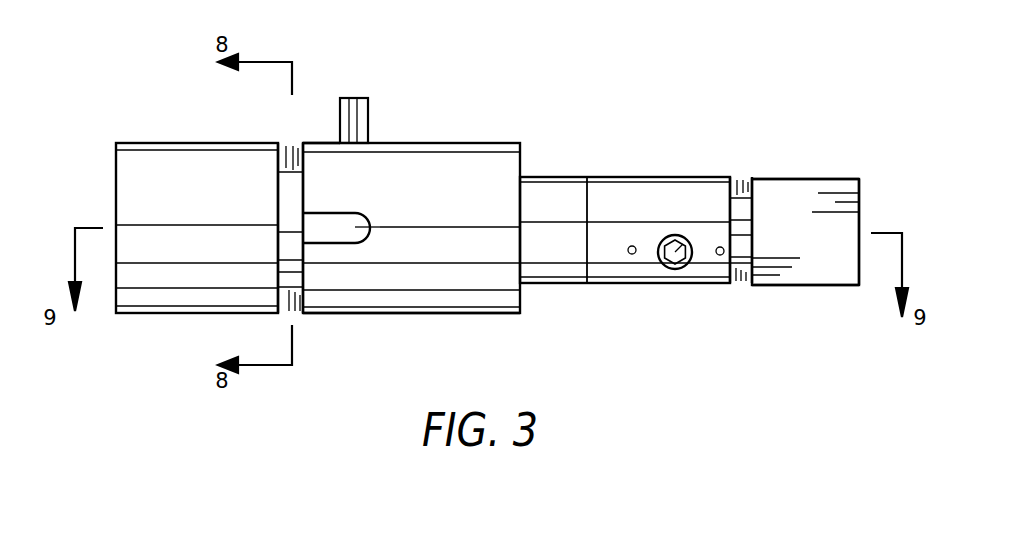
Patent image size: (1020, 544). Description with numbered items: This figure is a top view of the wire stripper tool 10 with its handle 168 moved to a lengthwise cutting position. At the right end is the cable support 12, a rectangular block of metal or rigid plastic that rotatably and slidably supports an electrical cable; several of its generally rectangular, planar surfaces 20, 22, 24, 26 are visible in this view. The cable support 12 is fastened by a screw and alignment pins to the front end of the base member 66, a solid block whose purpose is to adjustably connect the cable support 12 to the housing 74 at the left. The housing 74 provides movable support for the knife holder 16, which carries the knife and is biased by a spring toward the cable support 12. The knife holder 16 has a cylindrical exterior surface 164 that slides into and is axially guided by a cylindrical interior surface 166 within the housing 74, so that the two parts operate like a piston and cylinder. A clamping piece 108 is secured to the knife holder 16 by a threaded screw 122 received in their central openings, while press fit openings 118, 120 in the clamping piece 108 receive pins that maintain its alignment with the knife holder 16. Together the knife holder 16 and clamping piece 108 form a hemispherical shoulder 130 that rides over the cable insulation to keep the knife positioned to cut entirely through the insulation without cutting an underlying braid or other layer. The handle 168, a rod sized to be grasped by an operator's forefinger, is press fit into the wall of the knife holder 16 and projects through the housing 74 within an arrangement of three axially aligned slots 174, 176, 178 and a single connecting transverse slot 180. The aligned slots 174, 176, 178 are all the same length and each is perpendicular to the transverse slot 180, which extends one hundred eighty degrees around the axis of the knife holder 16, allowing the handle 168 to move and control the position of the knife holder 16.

The wire stripper tool 10 is at (553, 68).
The cable support 12 is at (848, 206).
The knife holder 16 is at (545, 268).
The planar surface 20 is at (832, 258).
The planar surface 22 is at (816, 178).
The planar surface 24 is at (860, 258).
The planar surface 26 is at (778, 287).
The base member 66 is at (746, 283).
The housing 74 is at (432, 297).
The clamping piece 108 is at (606, 194).
The press fit opening 118 is at (718, 256).
The press fit opening 120 is at (634, 255).
The threaded screw 122 is at (682, 243).
The shoulder 130 is at (742, 208).
The cylindrical exterior surface 164 is at (291, 221).
The cylindrical interior surface 166 is at (290, 160).
The handle 168 is at (370, 122).
The axially aligned slot 174 is at (328, 315).
The axially aligned slot 176 is at (355, 222).
The axially aligned slot 178 is at (323, 141).
The transverse slot 180 is at (291, 212).